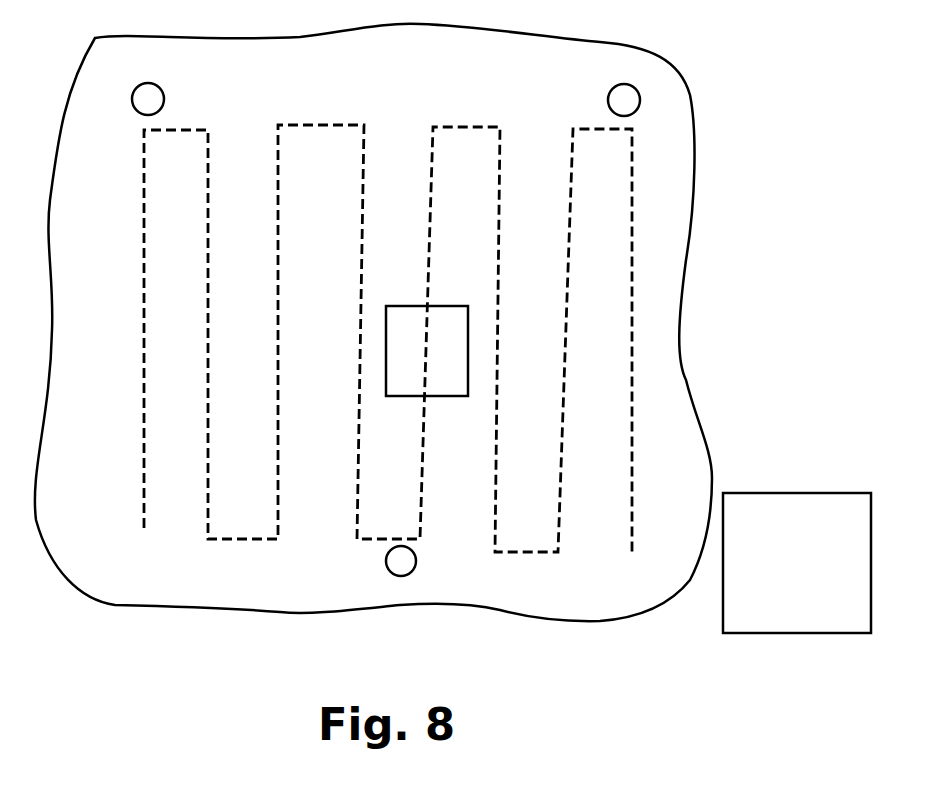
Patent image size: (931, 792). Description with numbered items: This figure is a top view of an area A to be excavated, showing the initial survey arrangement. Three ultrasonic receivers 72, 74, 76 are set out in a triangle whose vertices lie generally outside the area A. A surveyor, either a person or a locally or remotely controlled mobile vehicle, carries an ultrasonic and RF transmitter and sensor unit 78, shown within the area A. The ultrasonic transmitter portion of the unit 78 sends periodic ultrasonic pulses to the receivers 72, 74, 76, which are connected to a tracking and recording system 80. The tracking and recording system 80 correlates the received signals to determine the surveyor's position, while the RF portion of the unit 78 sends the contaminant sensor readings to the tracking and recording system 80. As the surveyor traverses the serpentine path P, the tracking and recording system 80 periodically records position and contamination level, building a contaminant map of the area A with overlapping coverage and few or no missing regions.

The ultrasonic receiver 72 is at (609, 92).
The ultrasonic receiver 74 is at (164, 97).
The ultrasonic receiver 76 is at (386, 568).
The ultrasonic and RF transmitter and sensor unit 78 is at (434, 306).
The tracking and recording system 80 is at (815, 493).
The path P is at (637, 202).
The area to be excavated A is at (72, 588).